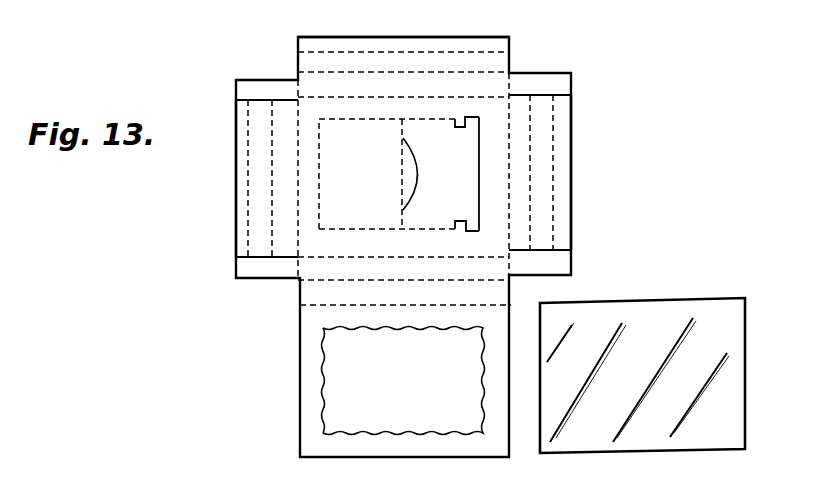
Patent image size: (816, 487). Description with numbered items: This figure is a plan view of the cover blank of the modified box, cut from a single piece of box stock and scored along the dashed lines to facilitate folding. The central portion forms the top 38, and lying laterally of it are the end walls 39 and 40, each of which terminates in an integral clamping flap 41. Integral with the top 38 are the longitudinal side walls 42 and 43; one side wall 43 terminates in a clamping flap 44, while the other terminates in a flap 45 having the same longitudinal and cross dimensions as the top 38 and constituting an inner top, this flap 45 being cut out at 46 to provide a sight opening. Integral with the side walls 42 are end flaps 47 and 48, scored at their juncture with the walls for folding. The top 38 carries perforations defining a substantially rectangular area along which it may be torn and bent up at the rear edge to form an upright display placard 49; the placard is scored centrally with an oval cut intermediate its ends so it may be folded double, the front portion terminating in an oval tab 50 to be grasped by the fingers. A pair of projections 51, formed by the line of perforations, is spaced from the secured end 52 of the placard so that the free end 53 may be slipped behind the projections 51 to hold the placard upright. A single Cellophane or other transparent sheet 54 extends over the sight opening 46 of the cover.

The top 38 is at (490, 235).
The end wall 39 is at (286, 180).
The end wall 40 is at (256, 168).
The clamping flap 41 is at (242, 119).
The side wall 42 is at (497, 80).
The side wall 43 is at (498, 60).
The clamping flap 44 is at (410, 40).
The flap 45 is at (500, 360).
The sight opening 46 is at (323, 377).
The end flap 47 is at (568, 78).
The end flap 48 is at (257, 82).
The display placard 49 is at (387, 174).
The oval tab 50 is at (415, 187).
The projection 51 is at (460, 125).
The secured end 52 is at (472, 189).
The free end 53 is at (318, 197).
The transparent sheet 54 is at (668, 308).